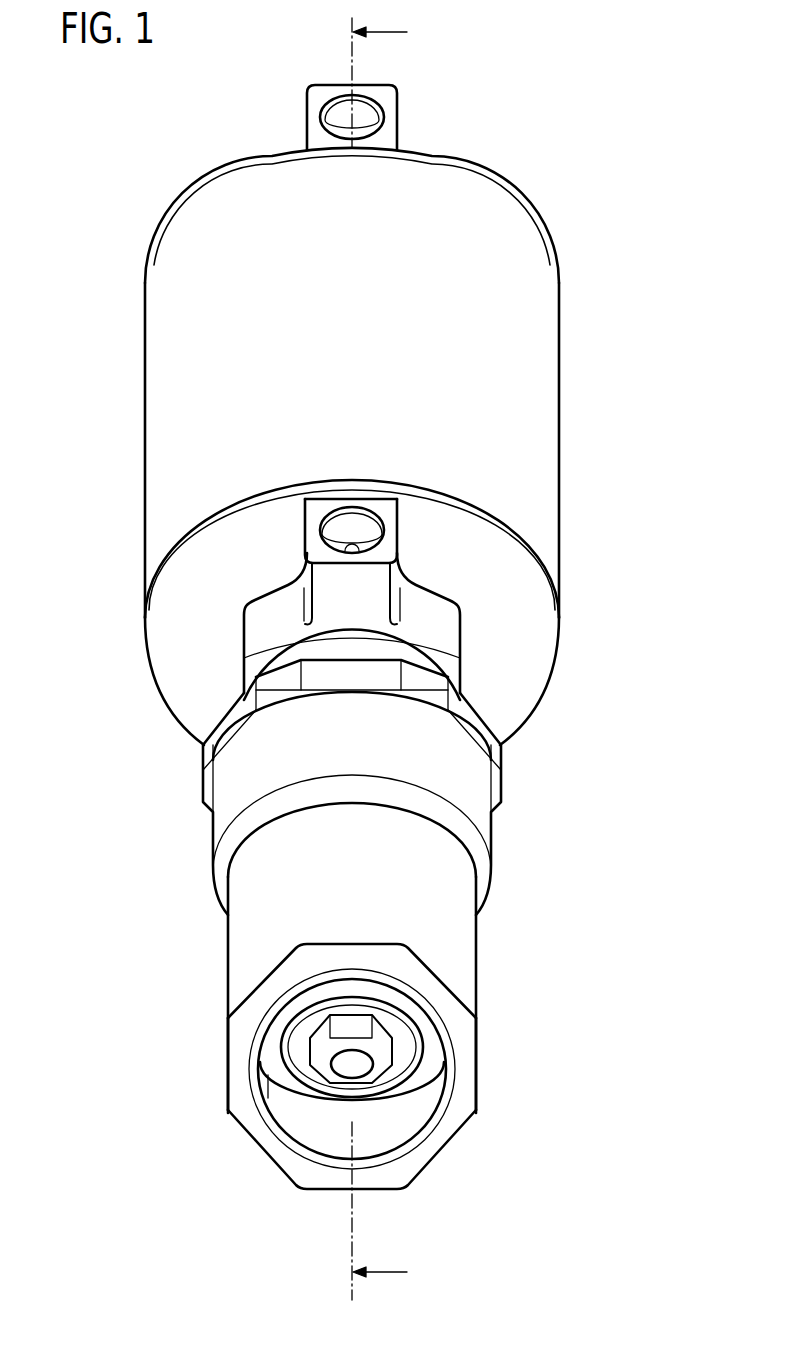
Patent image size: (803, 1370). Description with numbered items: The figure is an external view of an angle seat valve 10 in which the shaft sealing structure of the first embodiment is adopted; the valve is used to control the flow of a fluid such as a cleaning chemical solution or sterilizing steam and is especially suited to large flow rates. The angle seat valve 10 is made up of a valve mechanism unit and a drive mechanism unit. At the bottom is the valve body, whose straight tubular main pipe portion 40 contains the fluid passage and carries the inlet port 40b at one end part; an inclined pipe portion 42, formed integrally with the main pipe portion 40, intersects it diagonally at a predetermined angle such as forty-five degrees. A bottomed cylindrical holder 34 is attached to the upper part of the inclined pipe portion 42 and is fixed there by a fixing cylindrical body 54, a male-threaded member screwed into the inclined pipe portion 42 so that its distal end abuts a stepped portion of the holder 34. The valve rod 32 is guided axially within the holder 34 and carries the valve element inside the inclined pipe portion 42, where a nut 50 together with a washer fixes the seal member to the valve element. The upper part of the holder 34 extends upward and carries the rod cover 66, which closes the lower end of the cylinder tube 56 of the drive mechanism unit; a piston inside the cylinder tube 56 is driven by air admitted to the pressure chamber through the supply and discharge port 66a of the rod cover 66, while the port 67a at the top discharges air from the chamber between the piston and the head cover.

The angle seat valve 10 is at (618, 136).
The valve rod 32 is at (352, 1065).
The holder 34 is at (311, 655).
The main pipe portion 40 is at (467, 1075).
The inlet port 40b is at (410, 1108).
The inclined pipe portion 42 is at (460, 947).
The nut 50 is at (325, 1055).
The fixing cylindrical body 54 is at (493, 753).
The cylinder tube 56 is at (537, 358).
The rod cover 66 is at (535, 645).
The supply and discharge port 66a is at (360, 528).
The port 67a is at (365, 117).